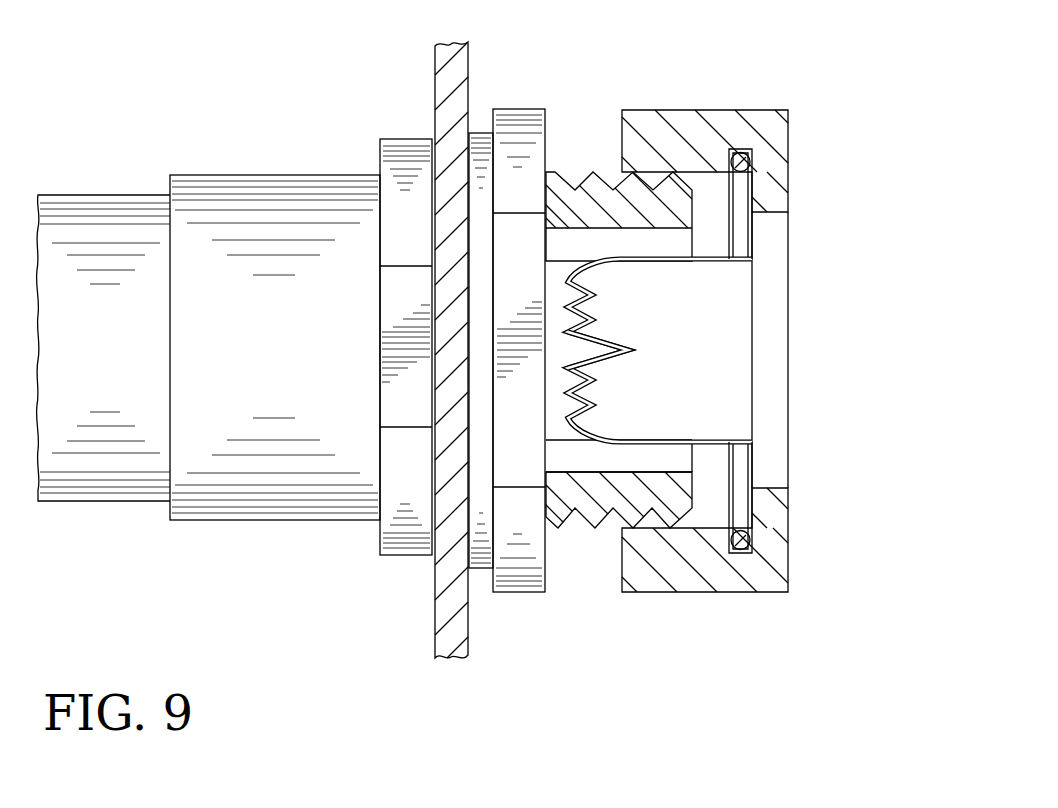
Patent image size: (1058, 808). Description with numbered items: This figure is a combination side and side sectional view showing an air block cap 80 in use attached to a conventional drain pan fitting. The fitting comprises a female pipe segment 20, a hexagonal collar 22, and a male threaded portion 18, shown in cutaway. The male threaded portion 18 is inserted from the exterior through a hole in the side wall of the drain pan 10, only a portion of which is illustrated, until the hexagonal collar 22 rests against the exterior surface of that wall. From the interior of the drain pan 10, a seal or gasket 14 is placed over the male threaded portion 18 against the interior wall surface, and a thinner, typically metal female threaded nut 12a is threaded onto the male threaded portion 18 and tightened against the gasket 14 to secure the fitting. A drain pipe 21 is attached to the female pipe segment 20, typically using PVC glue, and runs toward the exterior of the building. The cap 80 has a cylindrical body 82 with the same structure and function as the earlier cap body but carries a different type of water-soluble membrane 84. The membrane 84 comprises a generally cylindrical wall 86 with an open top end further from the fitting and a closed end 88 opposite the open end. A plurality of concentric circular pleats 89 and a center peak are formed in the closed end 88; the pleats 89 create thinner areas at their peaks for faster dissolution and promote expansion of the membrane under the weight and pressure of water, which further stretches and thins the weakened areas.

The drain pan 10 is at (440, 82).
The female threaded nut 12a is at (515, 583).
The seal or gasket 14 is at (477, 133).
The male threaded portion 18 is at (567, 176).
The female pipe segment 20 is at (292, 184).
The drain pipe 21 is at (130, 205).
The hexagonal collar 22 is at (380, 156).
The air block cap 80 is at (742, 301).
The cylindrical body 82 is at (670, 112).
The water-soluble membrane 84 is at (757, 237).
The cylindrical wall 86 is at (712, 442).
The closed end 88 is at (573, 281).
The concentric circular pleats 89 is at (577, 412).